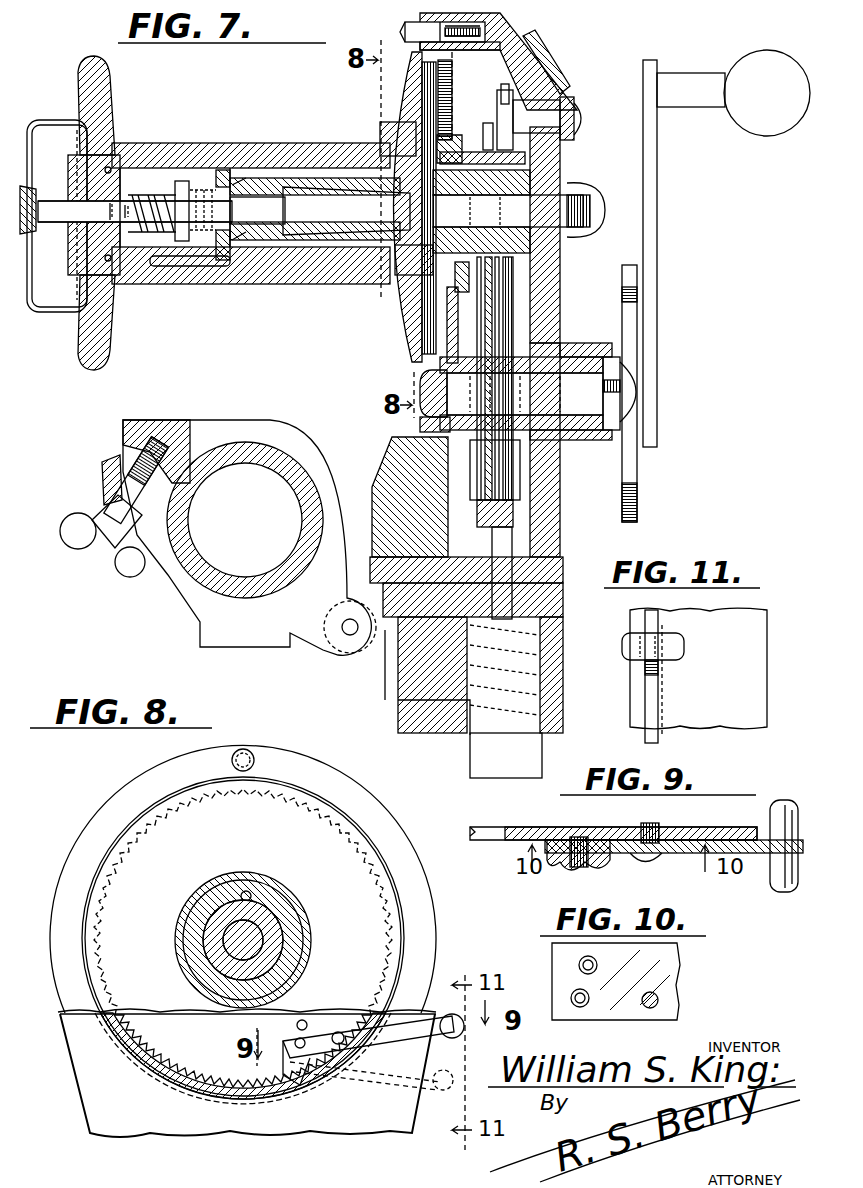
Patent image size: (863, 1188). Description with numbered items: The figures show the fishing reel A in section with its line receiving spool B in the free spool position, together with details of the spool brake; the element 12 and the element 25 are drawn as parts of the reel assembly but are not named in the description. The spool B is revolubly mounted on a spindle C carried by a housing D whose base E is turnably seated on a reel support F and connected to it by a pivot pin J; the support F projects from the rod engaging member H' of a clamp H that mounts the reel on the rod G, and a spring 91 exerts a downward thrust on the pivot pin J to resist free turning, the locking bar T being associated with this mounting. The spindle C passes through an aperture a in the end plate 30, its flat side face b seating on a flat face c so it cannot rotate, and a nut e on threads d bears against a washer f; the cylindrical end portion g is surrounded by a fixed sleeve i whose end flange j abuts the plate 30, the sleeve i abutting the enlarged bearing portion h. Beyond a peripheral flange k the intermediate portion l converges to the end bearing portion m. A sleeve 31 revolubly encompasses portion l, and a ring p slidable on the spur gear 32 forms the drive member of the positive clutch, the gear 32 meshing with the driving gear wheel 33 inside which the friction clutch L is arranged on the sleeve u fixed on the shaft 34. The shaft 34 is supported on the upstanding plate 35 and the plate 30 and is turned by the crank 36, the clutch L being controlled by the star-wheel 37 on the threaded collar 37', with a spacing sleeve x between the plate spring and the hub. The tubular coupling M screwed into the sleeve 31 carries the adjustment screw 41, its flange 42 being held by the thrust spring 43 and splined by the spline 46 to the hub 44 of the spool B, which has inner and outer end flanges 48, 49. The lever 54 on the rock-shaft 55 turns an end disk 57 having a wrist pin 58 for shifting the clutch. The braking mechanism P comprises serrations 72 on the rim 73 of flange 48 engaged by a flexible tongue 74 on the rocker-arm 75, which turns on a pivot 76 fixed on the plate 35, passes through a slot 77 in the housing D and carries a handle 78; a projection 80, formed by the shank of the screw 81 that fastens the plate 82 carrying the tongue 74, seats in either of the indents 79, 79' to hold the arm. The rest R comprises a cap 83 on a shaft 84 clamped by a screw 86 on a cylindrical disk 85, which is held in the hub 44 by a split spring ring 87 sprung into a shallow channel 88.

In FIG. 7, the gear disk 12 is at (395, 100).
In FIG. 7, the clutch housing 25 is at (541, 318).
In FIG. 7, the end plate 30 is at (556, 158).
In FIG. 7, the sleeve 31 is at (326, 246).
In FIG. 8, the sleeve 31 is at (212, 925).
In FIG. 7, the spur gear 32 is at (482, 156).
In FIG. 7, the driving gear wheel 33 is at (514, 515).
In FIG. 7, the revoluble shaft 34 is at (458, 386).
In FIG. 7, the upstanding plate 35 is at (423, 424).
In FIG. 9, the upstanding plate 35 is at (536, 828).
In FIG. 10, the upstanding plate 35 is at (664, 954).
In FIG. 8, the upstanding plate 35 is at (196, 1018).
In FIG. 7, the crank 36 is at (656, 234).
In FIG. 7, the star-wheel 37 is at (662, 393).
In FIG. 7, the collar 37' is at (662, 377).
In FIG. 7, the adjustment screw 41 is at (183, 180).
In FIG. 7, the flange 42 is at (228, 262).
In FIG. 7, the coiled thrust spring 43 is at (202, 242).
In FIG. 7, the tubular hub 44 is at (294, 278).
In FIG. 8, the tubular hub 44 is at (199, 882).
In FIG. 7, the spline 46 is at (168, 268).
In FIG. 7, the inner end flange 48 is at (393, 122).
In FIG. 8, the inner end flange 48 is at (140, 872).
In FIG. 7, the outer end flange 49 is at (108, 92).
In FIG. 7, the lever 54 is at (548, 62).
In FIG. 7, the rock-shaft 55 is at (545, 118).
In FIG. 7, the end disk 57 is at (495, 92).
In FIG. 7, the wrist pin 58 is at (480, 130).
In FIG. 7, the serrations 72 is at (424, 78).
In FIG. 8, the serrations 72 is at (132, 1048).
In FIG. 7, the rim 73 is at (464, 92).
In FIG. 8, the rim 73 is at (128, 1052).
In FIG. 8, the flexible tongue 74 is at (302, 1070).
In FIG. 11, the rocker-arm 75 is at (646, 670).
In FIG. 9, the rocker-arm 75 is at (752, 856).
In FIG. 8, the rocker-arm 75 is at (402, 1040).
In FIG. 9, the pivot 76 is at (656, 858).
In FIG. 10, the pivot 76 is at (658, 998).
In FIG. 8, the pivot 76 is at (340, 1032).
In FIG. 11, the slot 77 is at (646, 690).
In FIG. 11, the handle 78 is at (685, 653).
In FIG. 9, the handle 78 is at (770, 812).
In FIG. 8, the handle 78 is at (462, 1034).
In FIG. 10, the concave indent 79 is at (582, 1017).
In FIG. 10, the concave indent 79' is at (556, 960).
In FIG. 8, the concave indent 79' is at (321, 1007).
In FIG. 9, the projection 80 is at (582, 832).
In FIG. 9, the screw 81 is at (598, 866).
In FIG. 8, the screw 81 is at (296, 1040).
In FIG. 9, the plate 82 is at (556, 868).
In FIG. 7, the cap 83 is at (46, 312).
In FIG. 7, the shaft 84 is at (60, 226).
In FIG. 7, the cylindrical disk 85 is at (82, 175).
In FIG. 7, the screw 86 is at (152, 226).
In FIG. 7, the split spring ring 87 is at (125, 165).
In FIG. 7, the shallow channel 88 is at (118, 284).
In FIG. 7, the spring 91 is at (458, 692).
In FIG. 7, the fishing reel A is at (396, 24).
In FIG. 7, the line receiving spool B is at (231, 119).
In FIG. 7, the spindle C is at (300, 195).
In FIG. 8, the spindle C is at (222, 943).
In FIG. 7, the housing D is at (505, 48).
In FIG. 11, the housing D is at (748, 622).
In FIG. 8, the housing D is at (122, 793).
In FIG. 7, the base E is at (552, 570).
In FIG. 7, the reel support F is at (556, 598).
In FIG. 7, the fishing rod G is at (226, 442).
In FIG. 7, the rod engaging clamp H is at (218, 537).
In FIG. 7, the rod engaging member H' is at (189, 411).
In FIG. 7, the pivot pin J is at (512, 578).
In FIG. 7, the friction clutch L is at (463, 462).
In FIG. 7, the tubular coupling M is at (268, 242).
In FIG. 8, the braking mechanism P is at (266, 1070).
In FIG. 7, the rest R is at (39, 113).
In FIG. 7, the locking bar T is at (420, 667).
In FIG. 7, the aperture a is at (575, 192).
In FIG. 7, the flat side face b is at (535, 218).
In FIG. 7, the flat face c is at (568, 238).
In FIG. 7, the screw threads d is at (590, 203).
In FIG. 7, the nut e is at (593, 210).
In FIG. 7, the washer f is at (560, 260).
In FIG. 7, the cylindrical end portion g is at (390, 200).
In FIG. 7, the enlarged bearing portion h is at (420, 220).
In FIG. 7, the fixed sleeve i is at (480, 228).
In FIG. 7, the end flange j is at (482, 312).
In FIG. 7, the peripheral flange k is at (346, 211).
In FIG. 7, the intermediate portion l is at (316, 195).
In FIG. 7, the cylindrical end bearing portion m is at (262, 195).
In FIG. 7, the ring p is at (449, 141).
In FIG. 7, the sleeve u is at (528, 412).
In FIG. 7, the spacing sleeve x is at (610, 432).